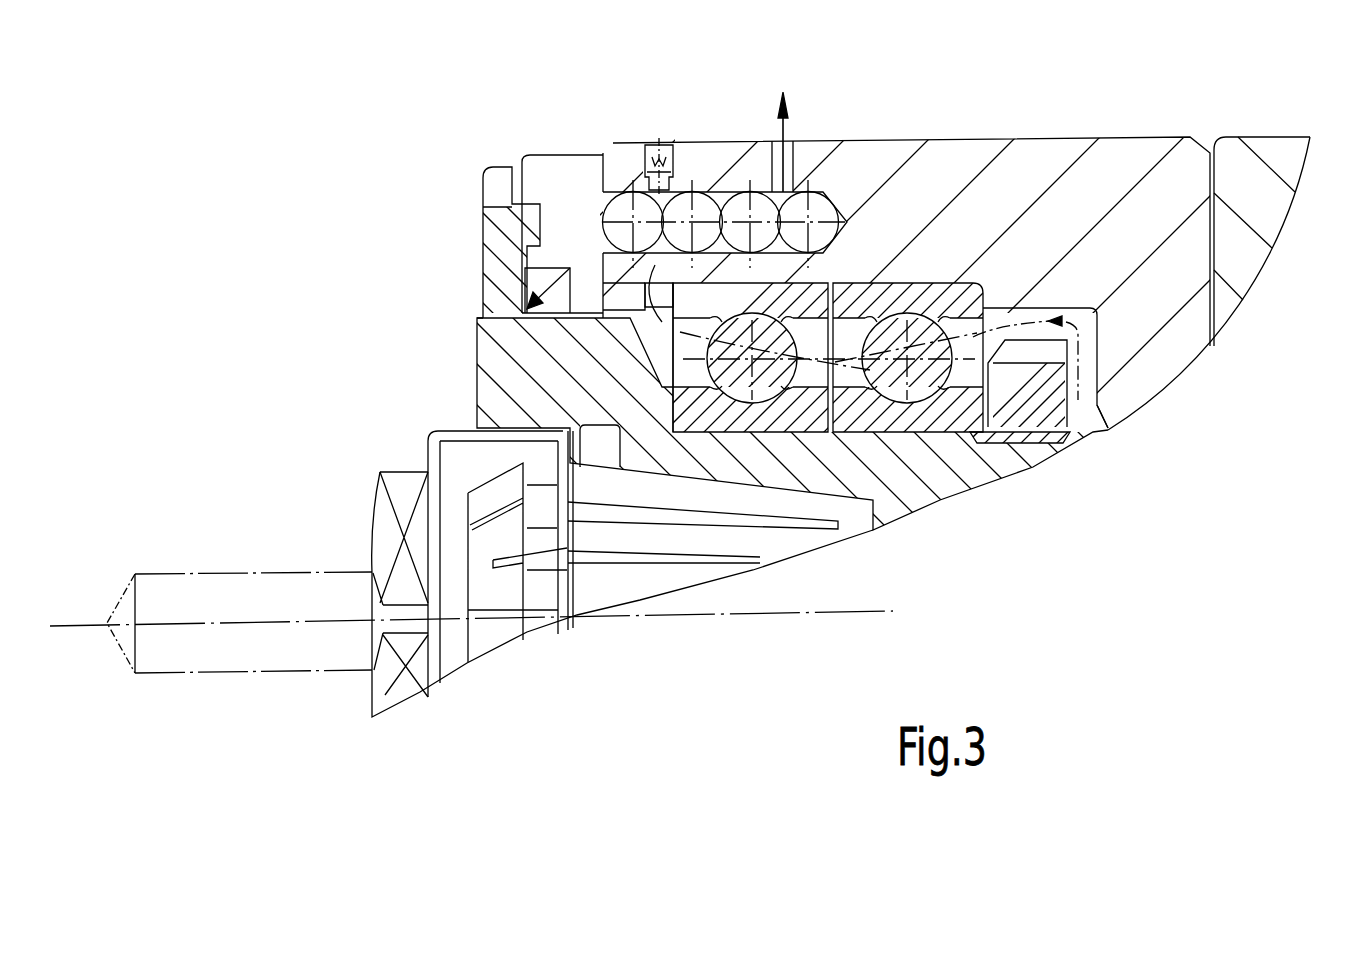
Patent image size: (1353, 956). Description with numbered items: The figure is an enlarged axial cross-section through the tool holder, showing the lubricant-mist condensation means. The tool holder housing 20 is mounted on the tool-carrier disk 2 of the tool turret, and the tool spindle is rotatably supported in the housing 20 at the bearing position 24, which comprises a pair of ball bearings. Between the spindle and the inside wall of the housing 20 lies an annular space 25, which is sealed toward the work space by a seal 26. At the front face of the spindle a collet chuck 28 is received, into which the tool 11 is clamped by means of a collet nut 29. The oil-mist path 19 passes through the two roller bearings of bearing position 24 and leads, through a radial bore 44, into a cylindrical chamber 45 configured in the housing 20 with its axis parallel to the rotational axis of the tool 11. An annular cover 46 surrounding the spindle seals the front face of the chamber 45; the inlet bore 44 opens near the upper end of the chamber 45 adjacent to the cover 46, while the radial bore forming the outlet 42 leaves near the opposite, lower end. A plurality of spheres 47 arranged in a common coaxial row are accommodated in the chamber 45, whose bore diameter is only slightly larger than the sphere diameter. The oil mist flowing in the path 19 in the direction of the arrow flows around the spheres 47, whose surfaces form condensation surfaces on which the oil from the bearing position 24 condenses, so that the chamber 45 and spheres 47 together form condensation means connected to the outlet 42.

The tool-carrier disk 2 is at (1250, 167).
The tool 11 is at (174, 643).
The oil-mist path 19 is at (1007, 303).
The tool holder housing 20 is at (933, 160).
The bearing position 24 is at (897, 273).
The annular space 25 is at (1100, 430).
The seal 26 is at (560, 273).
The collet chuck 28 is at (752, 362).
The collet nut 29 is at (387, 690).
The outlet 42 is at (788, 142).
The radial bore 44 is at (655, 312).
The cylindrical chamber 45 is at (692, 193).
The annular cover 46 is at (562, 157).
The spheres 47 is at (620, 235).